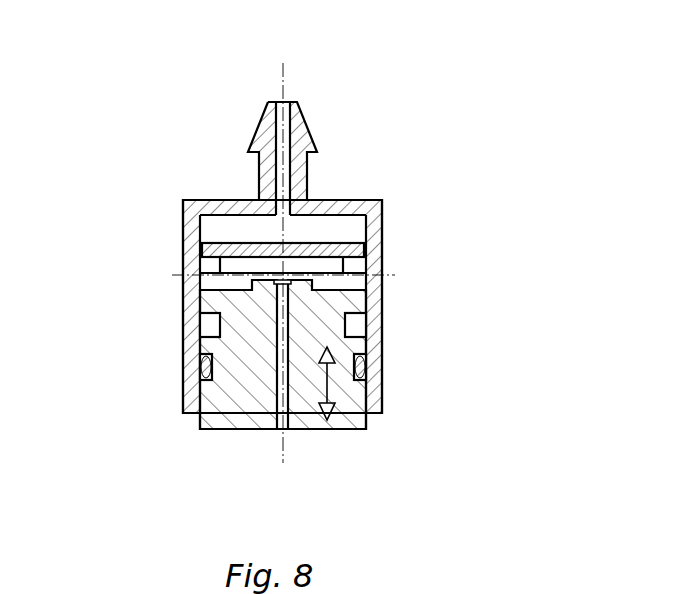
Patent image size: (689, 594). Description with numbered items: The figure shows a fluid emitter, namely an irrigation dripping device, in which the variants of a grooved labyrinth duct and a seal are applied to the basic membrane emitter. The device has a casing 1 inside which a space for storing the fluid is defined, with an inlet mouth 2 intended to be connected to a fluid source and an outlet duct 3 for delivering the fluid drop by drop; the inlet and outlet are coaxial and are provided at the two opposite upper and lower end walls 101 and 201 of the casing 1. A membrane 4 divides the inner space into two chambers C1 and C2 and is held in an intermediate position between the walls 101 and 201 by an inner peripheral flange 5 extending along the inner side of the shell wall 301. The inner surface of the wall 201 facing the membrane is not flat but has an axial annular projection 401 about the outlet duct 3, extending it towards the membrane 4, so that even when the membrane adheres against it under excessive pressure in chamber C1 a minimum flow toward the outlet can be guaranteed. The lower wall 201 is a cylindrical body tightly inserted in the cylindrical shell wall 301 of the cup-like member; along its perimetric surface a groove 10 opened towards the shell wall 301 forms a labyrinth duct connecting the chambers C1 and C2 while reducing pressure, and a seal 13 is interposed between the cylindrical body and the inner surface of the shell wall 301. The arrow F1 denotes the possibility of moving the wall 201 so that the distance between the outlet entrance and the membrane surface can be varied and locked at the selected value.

The casing 1 is at (157, 407).
The inlet mouth 2 is at (282, 102).
The outlet duct 3 is at (282, 430).
The membrane 4 is at (335, 246).
The inner peripheral flange 5 is at (212, 265).
The groove 10 is at (195, 342).
The seal 13 is at (200, 366).
The upper end wall 101 is at (342, 200).
The lower end wall 201 is at (338, 428).
The shell wall 301 is at (368, 362).
The axial annular projection 401 is at (372, 277).
The chamber C1 is at (220, 228).
The chamber C2 is at (222, 278).
The arrow F1 is at (335, 392).